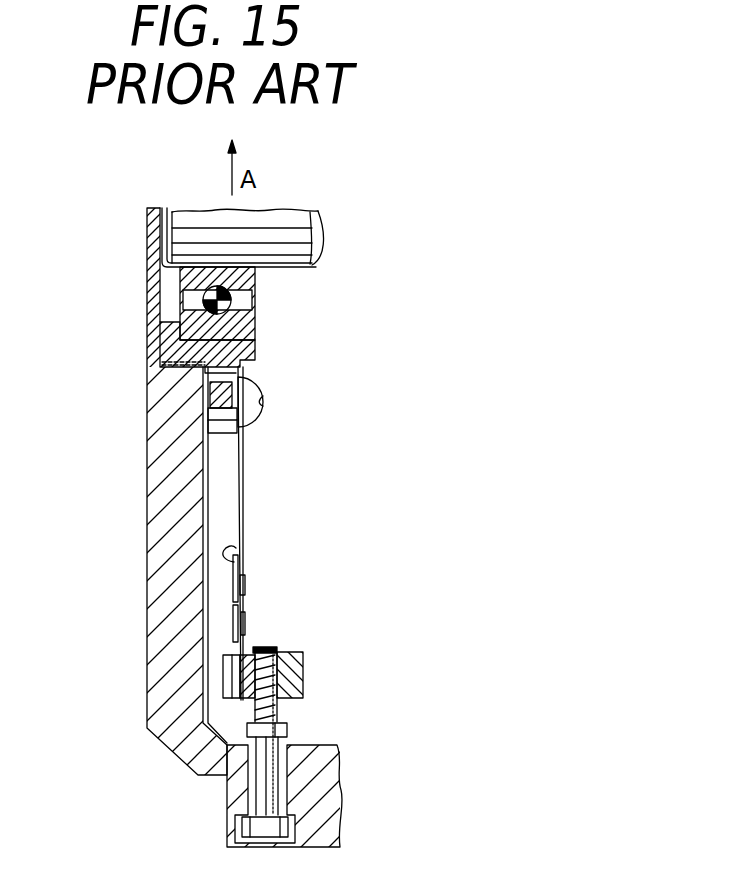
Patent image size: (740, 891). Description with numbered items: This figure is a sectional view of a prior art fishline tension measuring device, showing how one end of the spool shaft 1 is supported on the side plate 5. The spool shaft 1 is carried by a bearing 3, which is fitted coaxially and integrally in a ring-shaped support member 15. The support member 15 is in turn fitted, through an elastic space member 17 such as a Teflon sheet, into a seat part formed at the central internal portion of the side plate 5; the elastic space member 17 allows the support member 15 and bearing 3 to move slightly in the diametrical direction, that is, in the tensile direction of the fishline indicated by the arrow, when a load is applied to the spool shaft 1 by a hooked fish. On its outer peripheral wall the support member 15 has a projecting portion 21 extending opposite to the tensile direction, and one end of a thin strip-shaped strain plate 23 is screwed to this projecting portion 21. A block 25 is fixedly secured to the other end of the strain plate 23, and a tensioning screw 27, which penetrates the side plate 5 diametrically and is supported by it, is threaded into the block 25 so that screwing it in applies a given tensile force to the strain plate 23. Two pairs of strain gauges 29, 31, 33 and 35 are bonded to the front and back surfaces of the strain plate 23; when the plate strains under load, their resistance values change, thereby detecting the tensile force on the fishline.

The spool shaft 1 is at (285, 218).
The bearing 3 is at (251, 283).
The side plate 5 is at (151, 473).
The support member 15 is at (249, 352).
The elastic space member 17 is at (161, 384).
The projecting portion 21 is at (228, 435).
The strain plate 23 is at (245, 505).
The block 25 is at (295, 683).
The tensioning screw 27 is at (287, 730).
The strain gauge 29 is at (246, 585).
The strain gauge 31 is at (246, 625).
The strain gauge 33 is at (238, 548).
The strain gauge 35 is at (230, 610).